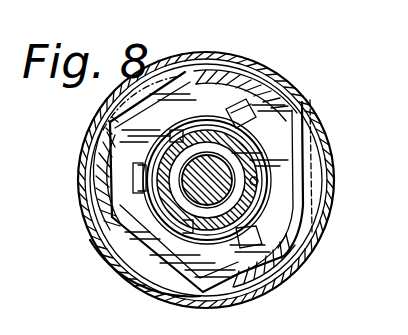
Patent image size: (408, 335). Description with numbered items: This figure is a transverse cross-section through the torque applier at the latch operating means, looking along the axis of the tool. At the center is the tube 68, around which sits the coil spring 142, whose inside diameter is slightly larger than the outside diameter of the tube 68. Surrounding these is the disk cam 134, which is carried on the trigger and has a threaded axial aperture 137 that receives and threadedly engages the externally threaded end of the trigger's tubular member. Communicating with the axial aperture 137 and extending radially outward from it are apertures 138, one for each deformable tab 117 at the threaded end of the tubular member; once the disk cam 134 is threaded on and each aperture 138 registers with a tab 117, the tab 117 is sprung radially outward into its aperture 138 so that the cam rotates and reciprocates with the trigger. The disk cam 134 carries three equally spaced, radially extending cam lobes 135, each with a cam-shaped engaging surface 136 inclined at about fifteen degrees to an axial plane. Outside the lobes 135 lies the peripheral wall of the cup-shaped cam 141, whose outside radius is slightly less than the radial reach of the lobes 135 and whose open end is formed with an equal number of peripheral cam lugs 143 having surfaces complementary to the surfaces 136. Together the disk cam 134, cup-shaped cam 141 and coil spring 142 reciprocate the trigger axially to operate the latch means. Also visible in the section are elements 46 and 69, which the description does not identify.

The outer ring 46 is at (332, 221).
The tube 68 is at (205, 132).
The body lobe 69 is at (198, 248).
The deformable tab 117 is at (154, 160).
The disk cam 134 is at (304, 188).
The cam lobe 135 is at (100, 139).
The cam-shaped engaging surface 136 is at (252, 124).
The axial aperture 137 is at (302, 150).
The aperture 138 is at (269, 107).
The cup-shaped cam 141 is at (118, 255).
The coil spring 142 is at (275, 212).
The cam lobe 143 is at (255, 68).